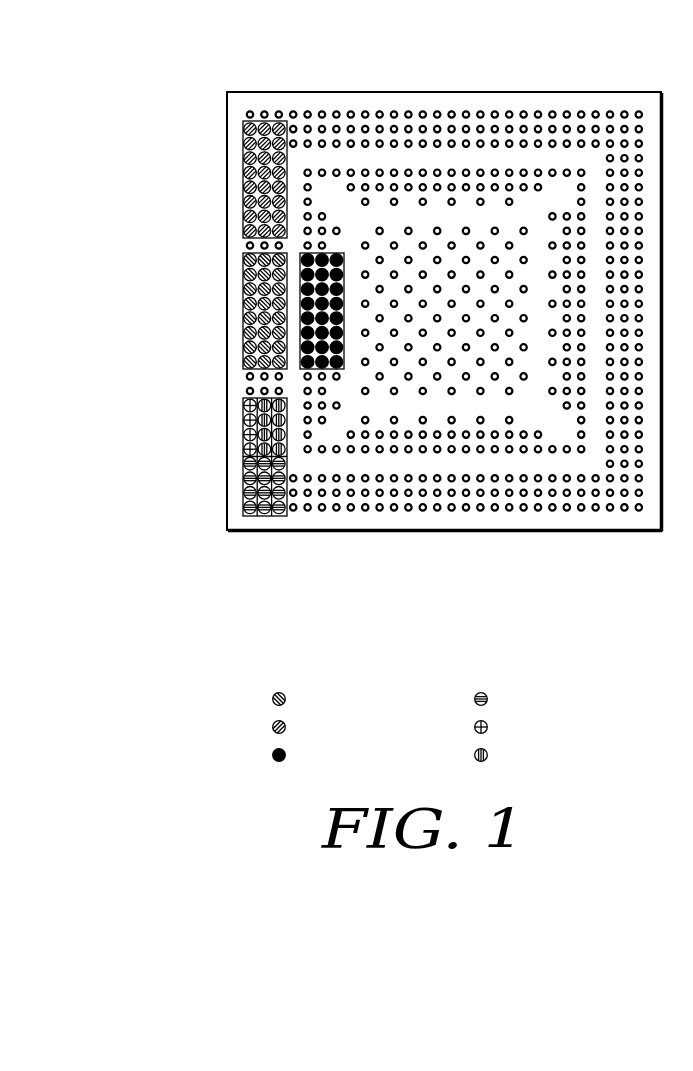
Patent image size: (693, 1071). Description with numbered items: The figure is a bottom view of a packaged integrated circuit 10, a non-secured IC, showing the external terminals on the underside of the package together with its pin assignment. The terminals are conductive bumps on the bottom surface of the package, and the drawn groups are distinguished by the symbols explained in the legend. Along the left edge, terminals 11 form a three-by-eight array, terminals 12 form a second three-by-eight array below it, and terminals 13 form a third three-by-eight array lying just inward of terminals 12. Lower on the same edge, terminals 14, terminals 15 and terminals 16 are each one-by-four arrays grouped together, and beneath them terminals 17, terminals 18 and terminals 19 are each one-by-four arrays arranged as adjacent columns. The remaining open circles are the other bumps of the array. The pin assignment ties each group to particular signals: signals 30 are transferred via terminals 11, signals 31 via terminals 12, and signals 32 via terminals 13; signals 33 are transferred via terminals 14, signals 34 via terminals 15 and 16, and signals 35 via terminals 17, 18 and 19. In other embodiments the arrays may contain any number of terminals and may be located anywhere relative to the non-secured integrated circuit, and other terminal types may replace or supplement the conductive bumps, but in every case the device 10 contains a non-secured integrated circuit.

The packaged integrated circuit 10 is at (618, 70).
The terminals 11 is at (243, 147).
The terminals 12 is at (243, 318).
The terminals 13 is at (300, 265).
The terminals 14 is at (243, 435).
The terminals 15 is at (262, 399).
The terminals 16 is at (287, 443).
The terminals 17 is at (243, 503).
The terminals 18 is at (263, 514).
The terminals 19 is at (281, 514).
The signals 30 is at (345, 727).
The signals 31 is at (345, 699).
The signals 32 is at (345, 755).
The signals 33 is at (548, 727).
The signals 34 is at (548, 755).
The signals 35 is at (548, 699).